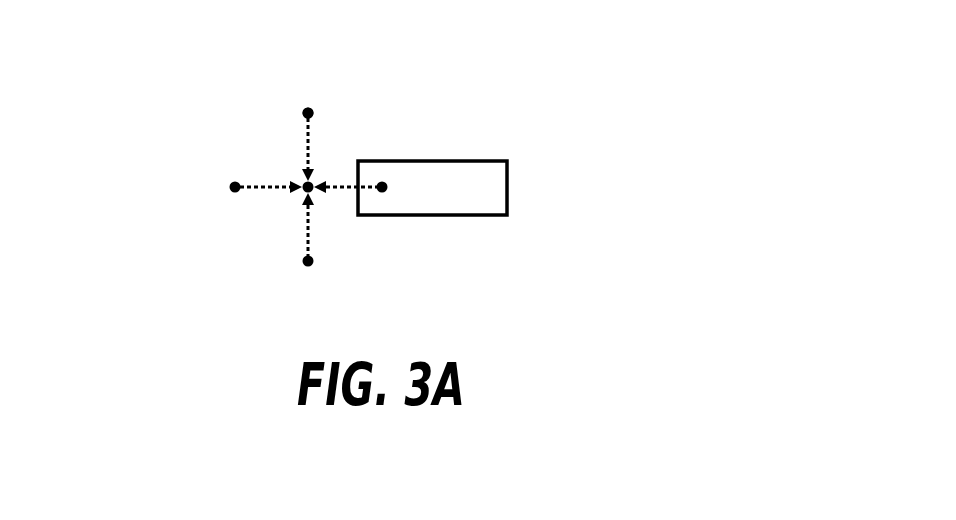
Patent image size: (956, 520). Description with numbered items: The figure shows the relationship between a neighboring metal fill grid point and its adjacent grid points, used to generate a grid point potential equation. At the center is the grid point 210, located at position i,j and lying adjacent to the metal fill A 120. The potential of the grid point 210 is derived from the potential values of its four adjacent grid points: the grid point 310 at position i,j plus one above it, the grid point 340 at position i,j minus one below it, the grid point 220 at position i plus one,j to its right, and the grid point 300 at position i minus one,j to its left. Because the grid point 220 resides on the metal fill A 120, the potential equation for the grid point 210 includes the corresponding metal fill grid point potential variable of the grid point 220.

The metal fill A 120 is at (556, 199).
The grid point 210 is at (218, 152).
The grid point 220 is at (488, 248).
The grid point 300 is at (180, 229).
The grid point 310 is at (215, 67).
The grid point 340 is at (251, 226).